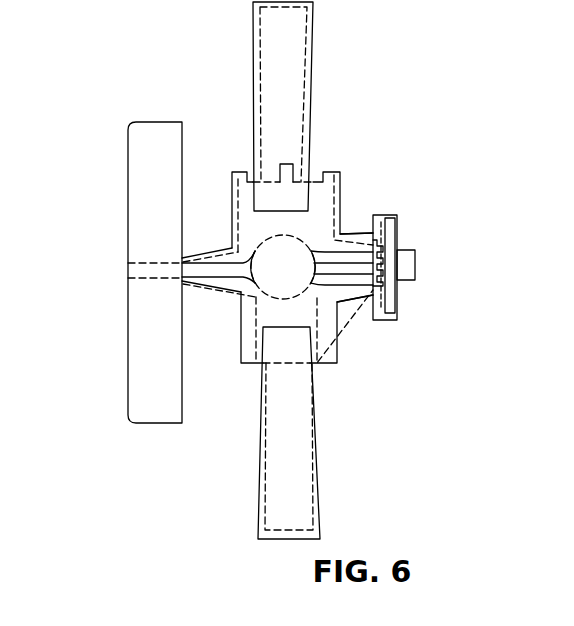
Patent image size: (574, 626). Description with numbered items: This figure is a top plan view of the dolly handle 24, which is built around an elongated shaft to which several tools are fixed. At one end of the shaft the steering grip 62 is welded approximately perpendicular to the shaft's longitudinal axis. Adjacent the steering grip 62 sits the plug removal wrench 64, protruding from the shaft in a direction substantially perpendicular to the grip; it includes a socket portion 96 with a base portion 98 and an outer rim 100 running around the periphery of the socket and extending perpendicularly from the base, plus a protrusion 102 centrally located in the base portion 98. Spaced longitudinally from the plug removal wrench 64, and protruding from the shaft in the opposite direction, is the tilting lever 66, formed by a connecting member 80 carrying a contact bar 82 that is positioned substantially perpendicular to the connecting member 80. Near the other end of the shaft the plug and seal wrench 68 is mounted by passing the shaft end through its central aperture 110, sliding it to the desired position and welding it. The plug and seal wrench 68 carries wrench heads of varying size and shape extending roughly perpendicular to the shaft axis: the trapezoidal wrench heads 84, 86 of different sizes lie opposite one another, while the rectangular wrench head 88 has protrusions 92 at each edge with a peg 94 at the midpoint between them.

The handle 24 is at (417, 100).
The steering grip 62 is at (316, 62).
The plug removal wrench 64 is at (405, 310).
The tilting lever 66 is at (120, 276).
The plug and seal wrench 68 is at (345, 340).
The connecting member 80 is at (203, 273).
The contact bar 82 is at (145, 135).
The wrench head 84 is at (357, 233).
The wrench head 86 is at (217, 252).
The wrench head 88 is at (350, 177).
The protrusions 92 is at (238, 172).
The peg 94 is at (287, 164).
The socket portion 96 is at (393, 326).
The base portion 98 is at (378, 230).
The outer rim 100 is at (388, 218).
The protrusion 102 is at (415, 265).
The aperture 110 is at (276, 300).